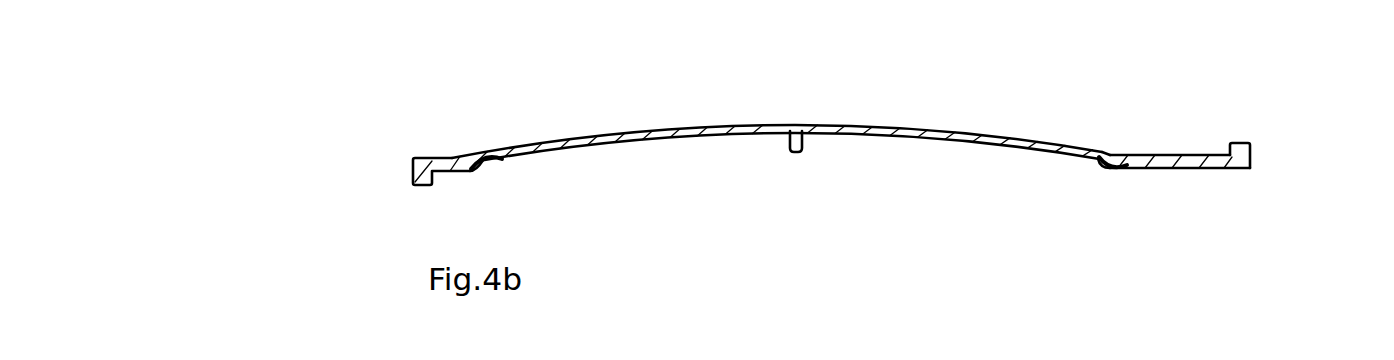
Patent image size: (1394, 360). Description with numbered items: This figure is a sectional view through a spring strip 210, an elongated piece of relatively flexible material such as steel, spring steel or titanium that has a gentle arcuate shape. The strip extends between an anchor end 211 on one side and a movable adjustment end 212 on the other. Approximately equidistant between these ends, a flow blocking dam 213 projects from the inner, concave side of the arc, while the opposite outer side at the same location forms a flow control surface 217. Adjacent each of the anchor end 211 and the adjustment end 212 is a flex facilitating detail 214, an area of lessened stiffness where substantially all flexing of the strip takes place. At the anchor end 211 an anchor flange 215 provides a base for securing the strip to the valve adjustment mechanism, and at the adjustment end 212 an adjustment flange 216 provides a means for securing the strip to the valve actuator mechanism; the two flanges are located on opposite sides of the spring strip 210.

The spring strip 210 is at (775, 100).
The anchor end 211 is at (1188, 167).
The adjustment end 212 is at (438, 158).
The flow blocking dam 213 is at (801, 144).
The flex facilitating detail 214 is at (483, 170).
The anchor flange 215 is at (1247, 143).
The adjustment flange 216 is at (413, 175).
The flow control surface 217 is at (793, 126).